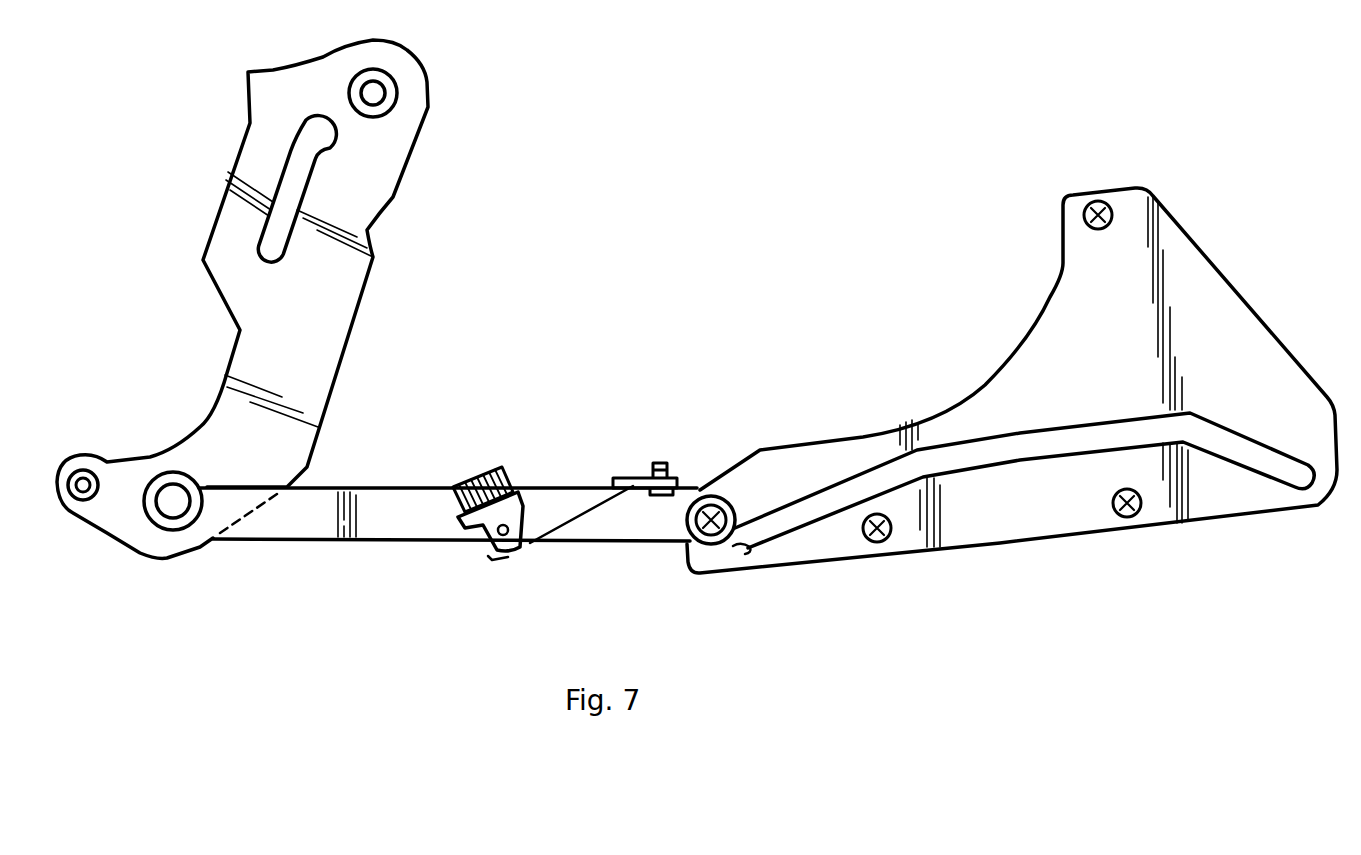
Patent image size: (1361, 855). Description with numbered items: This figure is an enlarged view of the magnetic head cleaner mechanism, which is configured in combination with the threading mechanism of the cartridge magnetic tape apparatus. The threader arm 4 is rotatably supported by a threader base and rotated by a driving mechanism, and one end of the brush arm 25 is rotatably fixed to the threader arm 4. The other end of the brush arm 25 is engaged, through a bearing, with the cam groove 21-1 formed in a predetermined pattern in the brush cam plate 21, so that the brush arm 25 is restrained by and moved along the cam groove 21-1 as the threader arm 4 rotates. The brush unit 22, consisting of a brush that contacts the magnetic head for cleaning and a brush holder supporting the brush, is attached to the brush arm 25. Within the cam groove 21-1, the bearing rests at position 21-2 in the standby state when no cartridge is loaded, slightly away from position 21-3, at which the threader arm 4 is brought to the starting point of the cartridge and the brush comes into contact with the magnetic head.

The threader arm 4 is at (370, 170).
The brush arm 25 is at (382, 518).
The brush unit 22 is at (485, 466).
The brush cam plate 21 is at (1040, 297).
The cam groove 21-1 is at (1030, 443).
The standby position 21-2 is at (740, 552).
The starting point position 21-3 is at (687, 543).